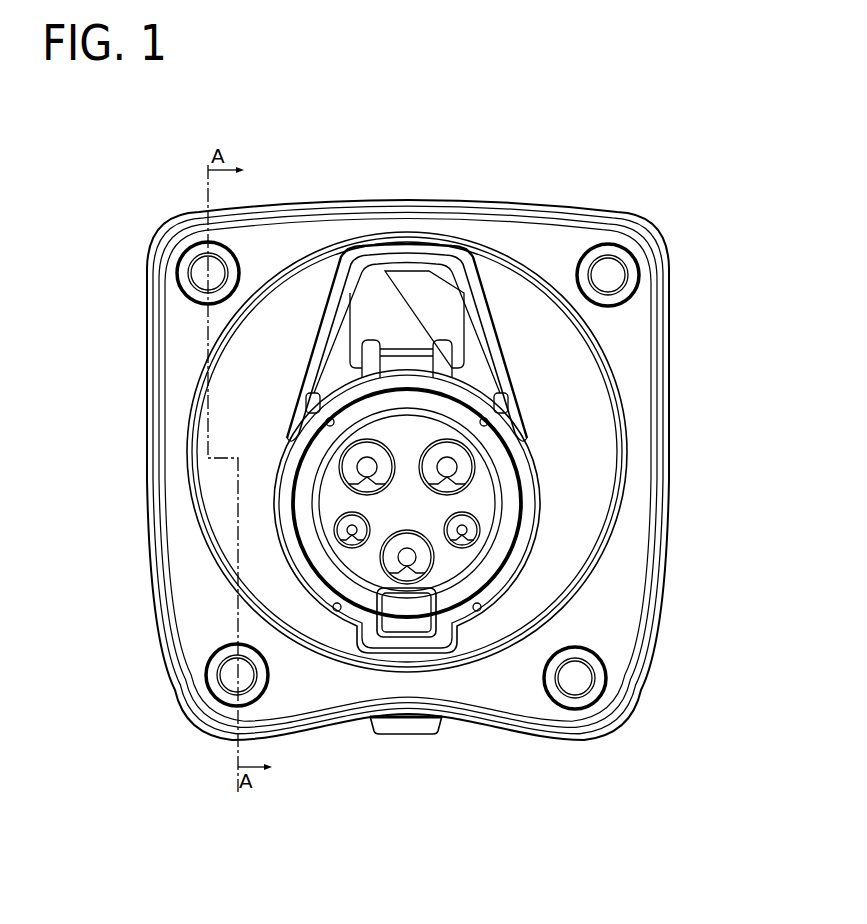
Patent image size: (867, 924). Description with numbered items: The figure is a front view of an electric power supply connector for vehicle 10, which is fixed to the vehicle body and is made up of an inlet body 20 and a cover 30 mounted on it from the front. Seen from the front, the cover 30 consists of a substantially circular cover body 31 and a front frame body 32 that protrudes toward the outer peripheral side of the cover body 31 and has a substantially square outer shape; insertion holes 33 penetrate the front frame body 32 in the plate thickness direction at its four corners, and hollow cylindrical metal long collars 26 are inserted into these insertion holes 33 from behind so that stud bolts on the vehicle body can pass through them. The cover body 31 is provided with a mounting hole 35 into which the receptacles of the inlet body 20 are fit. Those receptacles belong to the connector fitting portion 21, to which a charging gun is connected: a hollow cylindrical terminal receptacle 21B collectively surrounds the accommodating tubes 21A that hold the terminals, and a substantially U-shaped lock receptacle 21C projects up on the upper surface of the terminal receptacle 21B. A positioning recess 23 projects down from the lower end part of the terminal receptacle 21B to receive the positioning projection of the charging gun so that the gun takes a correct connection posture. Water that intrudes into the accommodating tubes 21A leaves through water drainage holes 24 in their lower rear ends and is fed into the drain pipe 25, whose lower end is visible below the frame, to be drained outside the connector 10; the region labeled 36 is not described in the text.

The electric power supply connector for vehicle 10 is at (416, 126).
The inlet body 20 is at (512, 297).
The connector fitting portion 21 is at (523, 363).
The accommodating tube 21A is at (455, 490).
The terminal receptacle 21B is at (515, 557).
The lock receptacle 21C is at (502, 340).
The positioning recess 23 is at (457, 611).
The water drainage holes 24 is at (497, 515).
The drain pipe 25 is at (405, 735).
The long collar 26 is at (187, 262).
The cover 30 is at (682, 380).
The cover body 31 is at (620, 398).
The front frame body 32 is at (620, 608).
The insertion holes 33 is at (230, 253).
The mounting hole 35 is at (338, 613).
The recess surface 36 is at (590, 430).